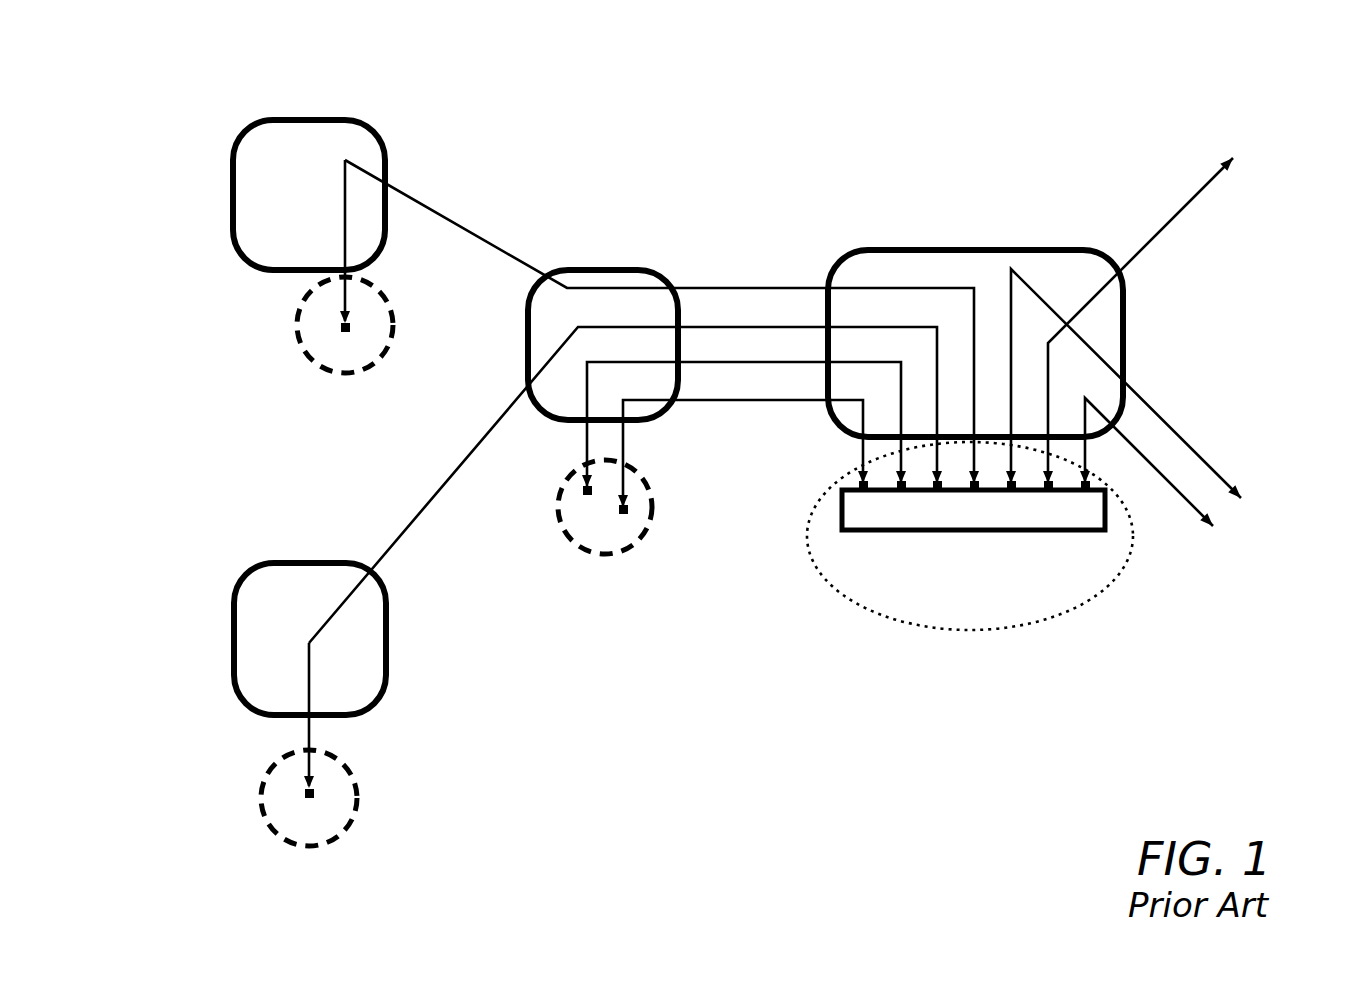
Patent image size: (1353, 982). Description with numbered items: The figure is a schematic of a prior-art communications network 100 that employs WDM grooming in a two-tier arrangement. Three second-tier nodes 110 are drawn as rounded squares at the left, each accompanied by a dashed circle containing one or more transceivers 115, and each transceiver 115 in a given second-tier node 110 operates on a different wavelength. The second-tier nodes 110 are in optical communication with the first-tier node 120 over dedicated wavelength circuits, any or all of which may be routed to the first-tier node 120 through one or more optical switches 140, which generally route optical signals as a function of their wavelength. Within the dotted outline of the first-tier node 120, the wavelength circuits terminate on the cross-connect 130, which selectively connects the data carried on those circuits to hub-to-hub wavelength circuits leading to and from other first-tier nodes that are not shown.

The network 100 is at (1152, 46).
The tier 2 node 110 is at (322, 362).
The transceiver 115 is at (350, 330).
The tier 1 node 120 is at (1110, 580).
The cross-connect 130 is at (968, 531).
The optical switch 140 is at (357, 122).